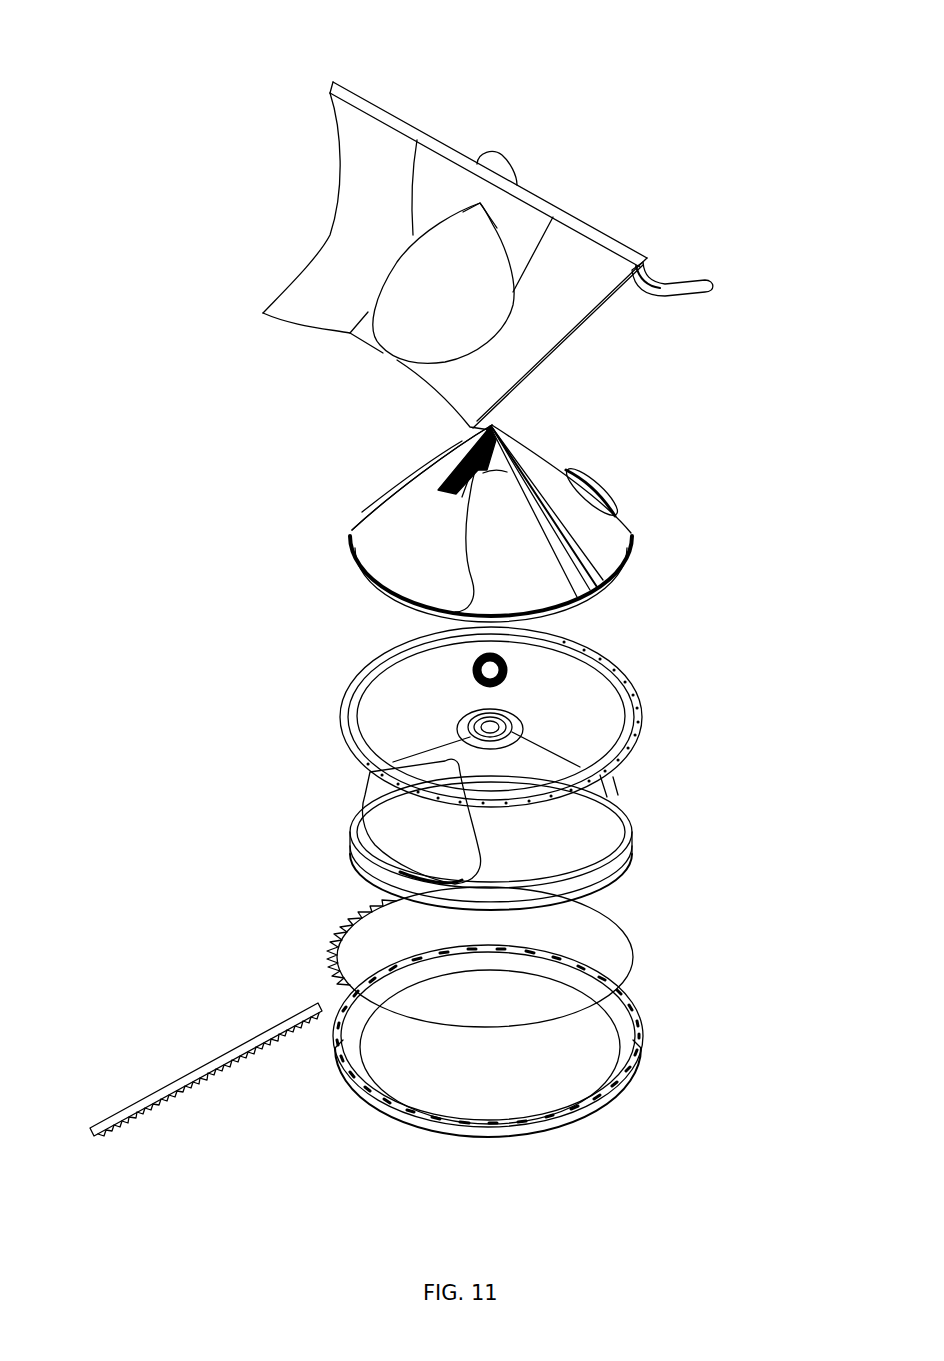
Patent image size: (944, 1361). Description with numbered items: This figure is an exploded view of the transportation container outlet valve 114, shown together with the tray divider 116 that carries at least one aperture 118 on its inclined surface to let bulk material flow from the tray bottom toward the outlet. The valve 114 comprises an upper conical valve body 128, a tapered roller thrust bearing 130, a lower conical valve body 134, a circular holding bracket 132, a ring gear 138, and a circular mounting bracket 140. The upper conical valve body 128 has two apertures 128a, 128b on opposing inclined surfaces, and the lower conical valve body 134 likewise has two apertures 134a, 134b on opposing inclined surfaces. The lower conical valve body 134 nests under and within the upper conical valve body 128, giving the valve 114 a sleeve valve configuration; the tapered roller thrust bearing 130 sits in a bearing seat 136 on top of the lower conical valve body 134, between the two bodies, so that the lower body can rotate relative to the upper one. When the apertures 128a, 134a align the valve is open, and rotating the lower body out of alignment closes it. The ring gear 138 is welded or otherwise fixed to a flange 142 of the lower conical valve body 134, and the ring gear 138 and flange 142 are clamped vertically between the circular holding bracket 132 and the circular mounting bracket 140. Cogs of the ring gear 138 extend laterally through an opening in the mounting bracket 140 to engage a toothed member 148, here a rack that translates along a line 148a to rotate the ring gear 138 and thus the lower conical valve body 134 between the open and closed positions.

The transportation container outlet valve 114 is at (158, 78).
The tray divider 116 is at (585, 260).
The aperture 118 is at (425, 278).
The upper conical valve body 128 is at (533, 510).
The aperture of the upper conical valve body 128a is at (397, 543).
The aperture of the upper conical valve body 128b is at (607, 490).
The tapered roller thrust bearing 130 is at (510, 665).
The circular holding bracket 132 is at (510, 705).
The lower conical valve body 134 is at (511, 821).
The aperture of the lower conical valve body 134a is at (387, 838).
The aperture of the lower conical valve body 134b is at (613, 785).
The bearing seat 136 is at (460, 720).
The ring gear 138 is at (627, 973).
The circular mounting bracket 140 is at (638, 1083).
The flange 142 is at (593, 882).
The toothed member 148 is at (198, 1068).
The line 148a is at (308, 992).